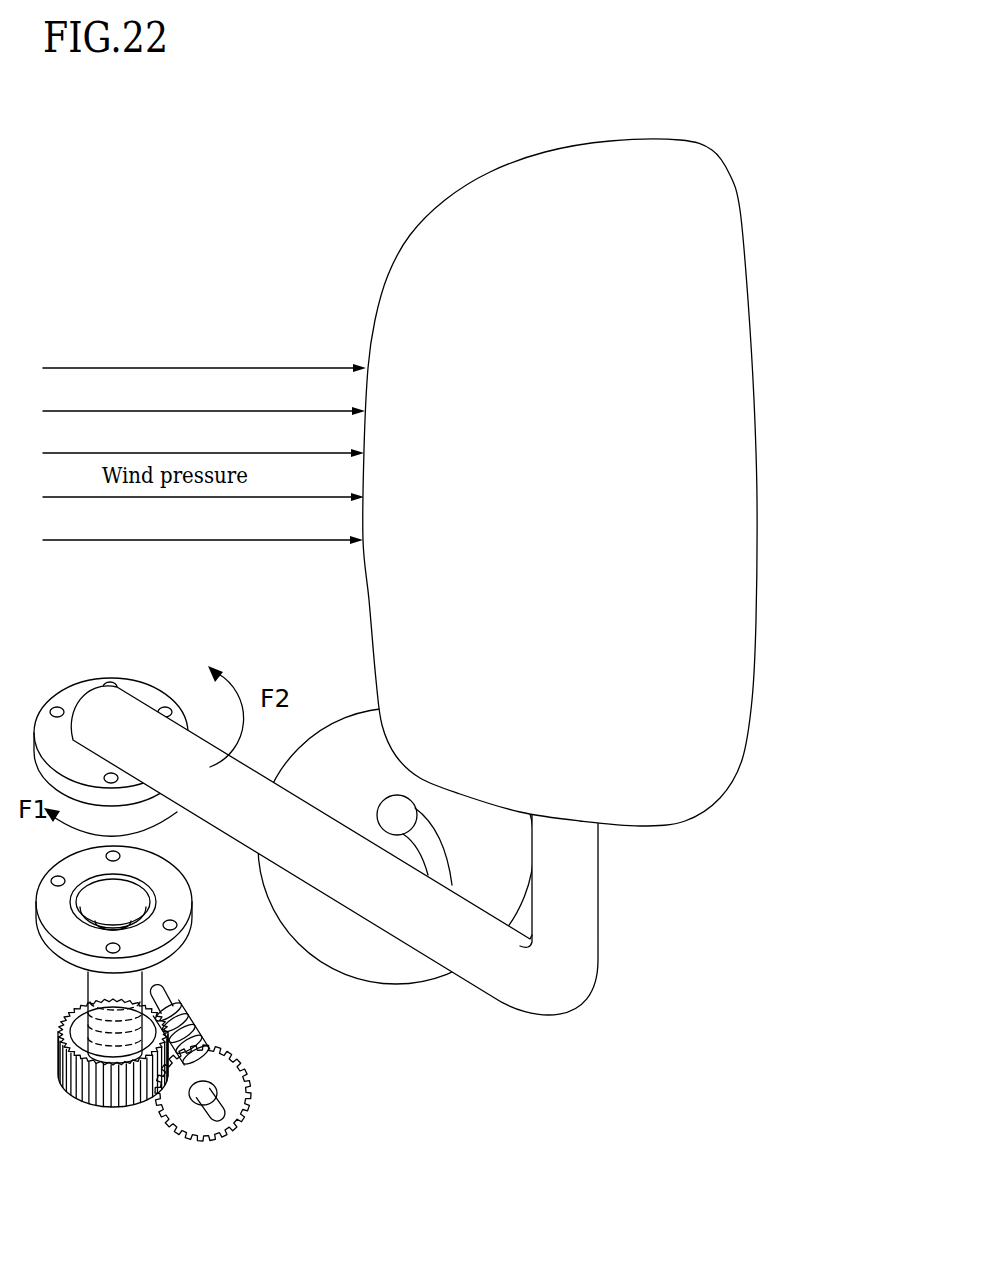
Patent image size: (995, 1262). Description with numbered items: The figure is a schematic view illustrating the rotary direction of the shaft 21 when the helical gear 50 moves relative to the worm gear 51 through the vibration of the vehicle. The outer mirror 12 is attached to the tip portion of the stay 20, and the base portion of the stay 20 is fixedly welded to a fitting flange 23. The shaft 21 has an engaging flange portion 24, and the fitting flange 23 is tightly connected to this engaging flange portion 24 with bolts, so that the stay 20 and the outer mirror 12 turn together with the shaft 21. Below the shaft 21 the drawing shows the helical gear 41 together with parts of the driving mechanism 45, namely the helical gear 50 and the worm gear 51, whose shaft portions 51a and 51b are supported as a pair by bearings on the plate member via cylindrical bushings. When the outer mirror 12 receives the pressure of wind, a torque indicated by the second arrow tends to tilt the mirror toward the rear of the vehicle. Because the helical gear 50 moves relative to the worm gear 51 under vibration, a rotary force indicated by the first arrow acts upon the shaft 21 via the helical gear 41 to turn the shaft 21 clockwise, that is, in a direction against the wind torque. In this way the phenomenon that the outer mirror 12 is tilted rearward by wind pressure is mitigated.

The outer mirror 12 is at (748, 299).
The stay 20 is at (438, 937).
The shaft 21 is at (88, 985).
The fitting flange 23 is at (151, 698).
The engaging flange portion 24 is at (50, 908).
The helical gear 41 is at (60, 1035).
The driving mechanism 45 is at (182, 1055).
The helical gear 50 is at (248, 1070).
The worm gear 51 is at (196, 1026).
The shaft portion 51a is at (172, 993).
The shaft portion 51b is at (223, 1103).